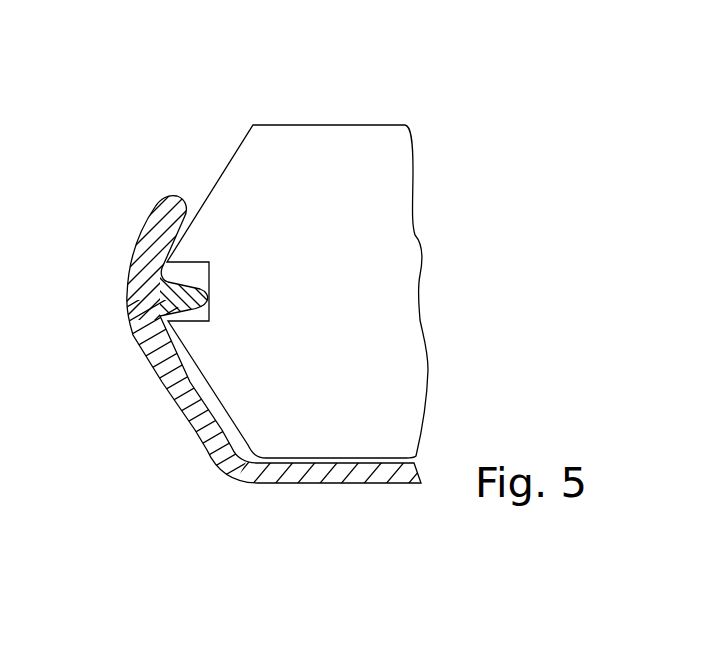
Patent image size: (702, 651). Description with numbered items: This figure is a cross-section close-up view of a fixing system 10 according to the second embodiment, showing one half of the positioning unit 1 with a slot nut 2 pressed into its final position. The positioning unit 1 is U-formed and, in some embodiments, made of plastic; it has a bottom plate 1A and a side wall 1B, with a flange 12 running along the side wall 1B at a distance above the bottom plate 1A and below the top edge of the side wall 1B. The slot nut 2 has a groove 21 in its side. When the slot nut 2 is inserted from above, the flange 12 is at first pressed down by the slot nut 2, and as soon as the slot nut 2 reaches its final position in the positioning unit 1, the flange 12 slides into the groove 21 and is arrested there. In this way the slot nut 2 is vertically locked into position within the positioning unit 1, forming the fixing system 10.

The fixing system 10 is at (171, 122).
The slot nut 2 is at (337, 153).
The groove 21 is at (210, 262).
The positioning unit 1 is at (216, 490).
The flange 12 is at (162, 305).
The side wall 1B is at (156, 396).
The bottom plate 1A is at (372, 503).